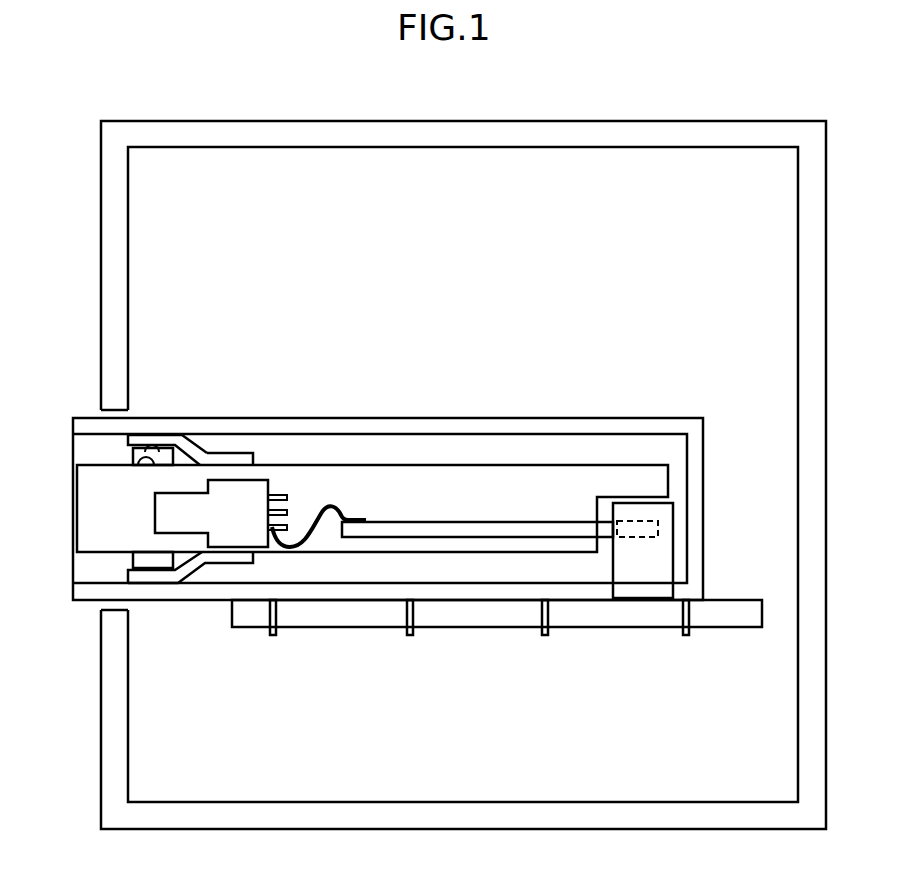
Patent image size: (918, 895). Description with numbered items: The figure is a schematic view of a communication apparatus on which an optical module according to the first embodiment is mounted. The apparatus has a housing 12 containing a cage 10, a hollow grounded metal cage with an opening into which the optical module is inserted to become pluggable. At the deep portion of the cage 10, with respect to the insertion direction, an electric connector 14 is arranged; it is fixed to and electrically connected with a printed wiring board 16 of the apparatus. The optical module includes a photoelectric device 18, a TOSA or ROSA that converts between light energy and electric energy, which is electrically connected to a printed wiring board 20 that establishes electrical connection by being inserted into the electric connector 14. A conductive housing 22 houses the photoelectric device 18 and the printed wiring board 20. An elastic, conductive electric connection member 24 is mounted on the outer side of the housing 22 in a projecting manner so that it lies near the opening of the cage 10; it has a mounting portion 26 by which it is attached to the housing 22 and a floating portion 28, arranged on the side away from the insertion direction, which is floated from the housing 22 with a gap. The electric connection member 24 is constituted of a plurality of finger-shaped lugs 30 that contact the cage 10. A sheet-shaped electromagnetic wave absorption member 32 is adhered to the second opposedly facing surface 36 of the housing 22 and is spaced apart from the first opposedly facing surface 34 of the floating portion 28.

The cage 10 is at (476, 418).
The housing 12 is at (458, 133).
The electric connector 14 is at (675, 548).
The printed wiring board 16 is at (727, 627).
The photoelectric device 18 is at (258, 479).
The printed wiring board 20 is at (425, 522).
The housing 22 is at (360, 465).
The electric connection member 24 is at (199, 394).
The mounting portion 26 is at (234, 454).
The floating portion 28 is at (195, 440).
The finger-shaped lug 30 is at (190, 567).
The electromagnetic wave absorption member 32 is at (141, 447).
The first opposedly facing surface 34 is at (160, 449).
The second opposedly facing surface 36 is at (138, 460).